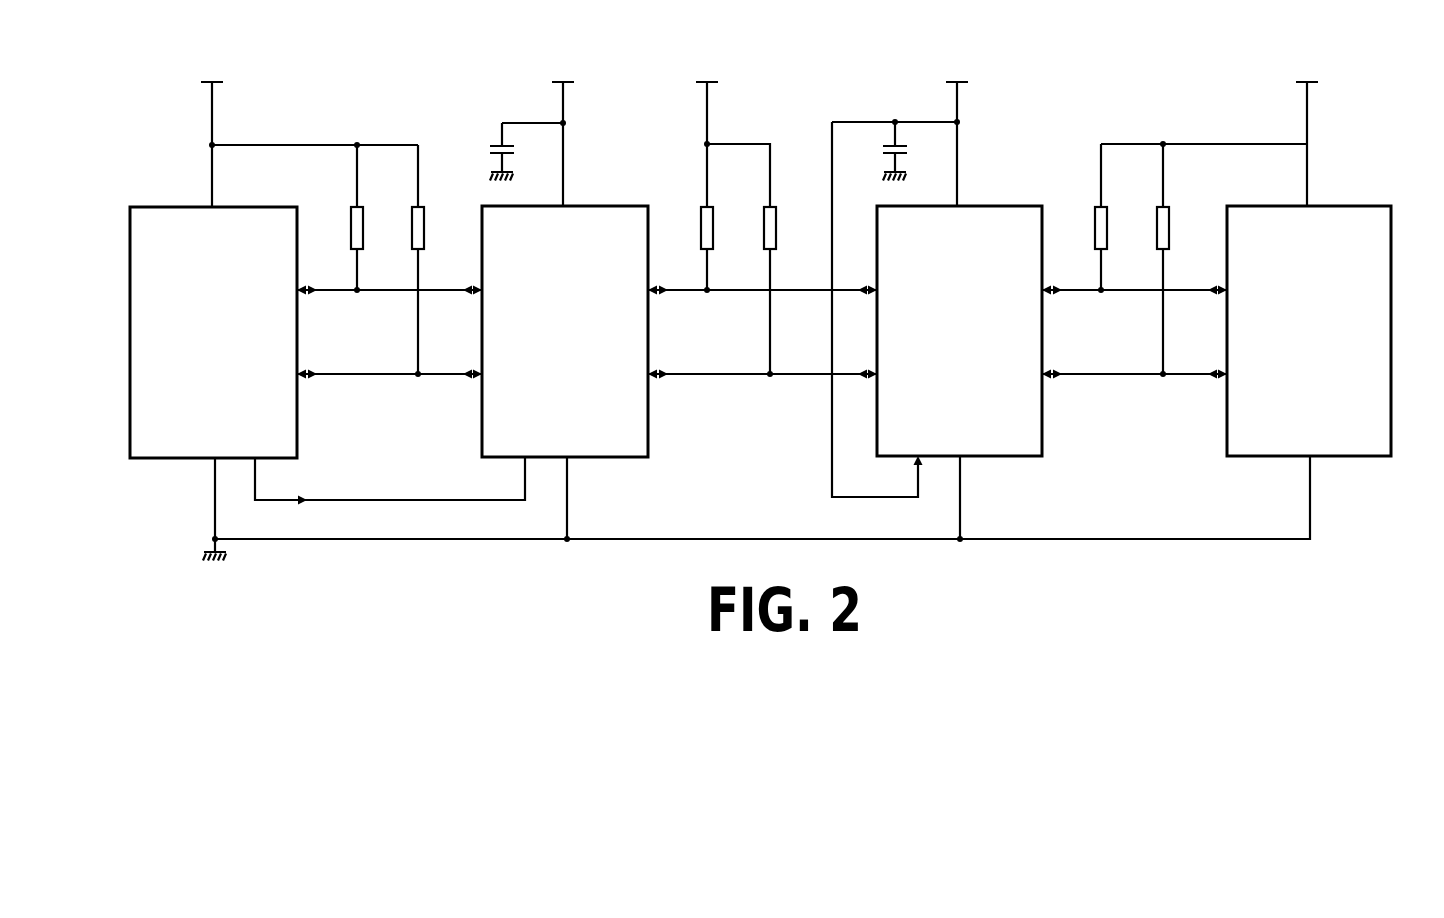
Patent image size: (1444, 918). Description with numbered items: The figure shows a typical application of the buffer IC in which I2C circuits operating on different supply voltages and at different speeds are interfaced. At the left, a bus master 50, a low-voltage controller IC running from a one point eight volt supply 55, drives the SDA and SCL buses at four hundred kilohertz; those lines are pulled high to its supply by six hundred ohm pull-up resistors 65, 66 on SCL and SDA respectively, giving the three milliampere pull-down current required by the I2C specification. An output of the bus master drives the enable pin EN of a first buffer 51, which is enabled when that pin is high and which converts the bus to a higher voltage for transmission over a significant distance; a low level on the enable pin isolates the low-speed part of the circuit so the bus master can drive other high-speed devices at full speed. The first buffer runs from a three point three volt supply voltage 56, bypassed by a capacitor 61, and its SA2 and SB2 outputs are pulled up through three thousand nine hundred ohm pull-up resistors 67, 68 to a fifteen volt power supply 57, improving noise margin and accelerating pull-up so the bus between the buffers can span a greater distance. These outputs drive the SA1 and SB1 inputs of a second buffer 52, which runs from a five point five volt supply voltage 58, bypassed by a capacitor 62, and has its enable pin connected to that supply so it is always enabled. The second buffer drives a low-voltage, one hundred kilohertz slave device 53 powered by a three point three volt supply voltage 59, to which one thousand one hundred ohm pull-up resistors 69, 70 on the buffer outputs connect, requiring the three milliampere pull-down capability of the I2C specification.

The bus master 50 is at (130, 207).
The first buffer 51 is at (611, 203).
The second buffer 52 is at (992, 203).
The slave device 53 is at (1357, 200).
The 1.8 volt supply 55 is at (210, 78).
The supply voltage of the first buffer 56 is at (557, 78).
The 15 volt power supply 57 is at (711, 78).
The 5.5 volt supply voltage 58 is at (957, 78).
The slave device power supply voltage 59 is at (1305, 78).
The capacitor 61 is at (492, 138).
The capacitor 62 is at (882, 146).
The pull-up resistor 65 is at (347, 220).
The pull-up resistor 66 is at (410, 214).
The pull-up resistor 67 is at (711, 224).
The pull-up resistor 68 is at (774, 224).
The pull-up resistor 69 is at (1108, 224).
The pull-up resistor 70 is at (1173, 224).